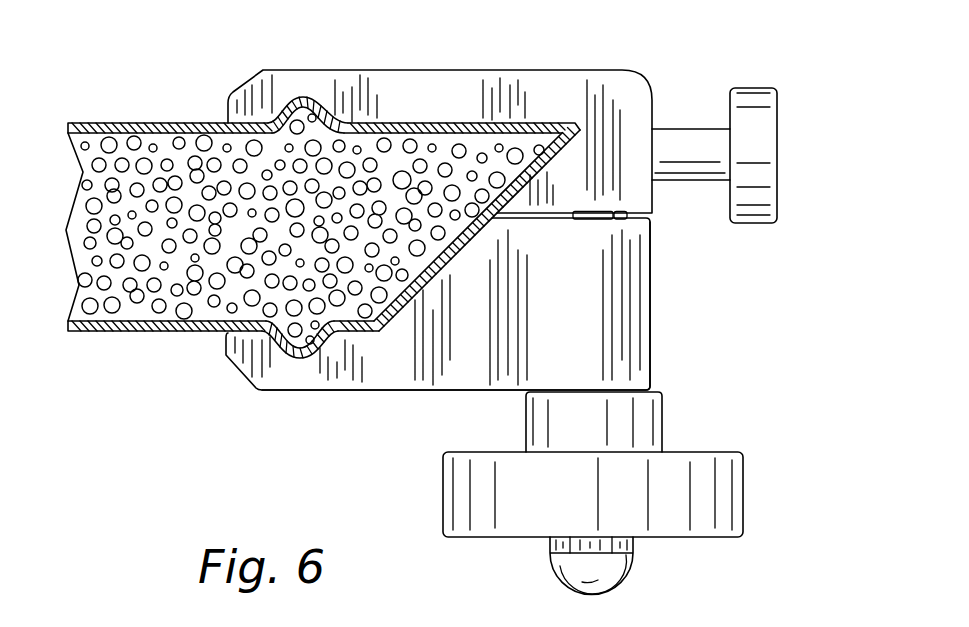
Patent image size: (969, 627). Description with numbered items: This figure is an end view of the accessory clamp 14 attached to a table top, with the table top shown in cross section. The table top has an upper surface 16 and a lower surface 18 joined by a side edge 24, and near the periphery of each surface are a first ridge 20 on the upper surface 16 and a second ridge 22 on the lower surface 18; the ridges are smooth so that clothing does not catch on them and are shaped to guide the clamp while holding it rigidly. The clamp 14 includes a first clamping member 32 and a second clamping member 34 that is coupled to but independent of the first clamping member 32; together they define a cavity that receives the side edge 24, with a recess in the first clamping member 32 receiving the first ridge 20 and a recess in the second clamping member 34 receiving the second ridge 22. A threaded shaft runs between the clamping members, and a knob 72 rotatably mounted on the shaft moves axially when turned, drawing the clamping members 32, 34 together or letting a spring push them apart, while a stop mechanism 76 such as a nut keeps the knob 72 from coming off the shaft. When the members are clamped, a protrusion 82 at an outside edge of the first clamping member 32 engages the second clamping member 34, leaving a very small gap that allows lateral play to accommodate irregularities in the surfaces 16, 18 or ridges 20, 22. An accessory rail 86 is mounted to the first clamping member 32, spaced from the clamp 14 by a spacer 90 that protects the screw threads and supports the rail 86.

The accessory clamp 14 is at (662, 354).
The upper surface 16 is at (131, 122).
The lower surface 18 is at (133, 332).
The first ridge 20 is at (302, 97).
The second ridge 22 is at (283, 388).
The side edge 24 is at (460, 254).
The first clamping member 32 is at (545, 97).
The second clamping member 34 is at (410, 373).
The knob 72 is at (708, 489).
The stop mechanism 76 is at (617, 577).
The protrusion 82 is at (637, 214).
The accessory rail 86 is at (773, 127).
The spacer 90 is at (693, 138).